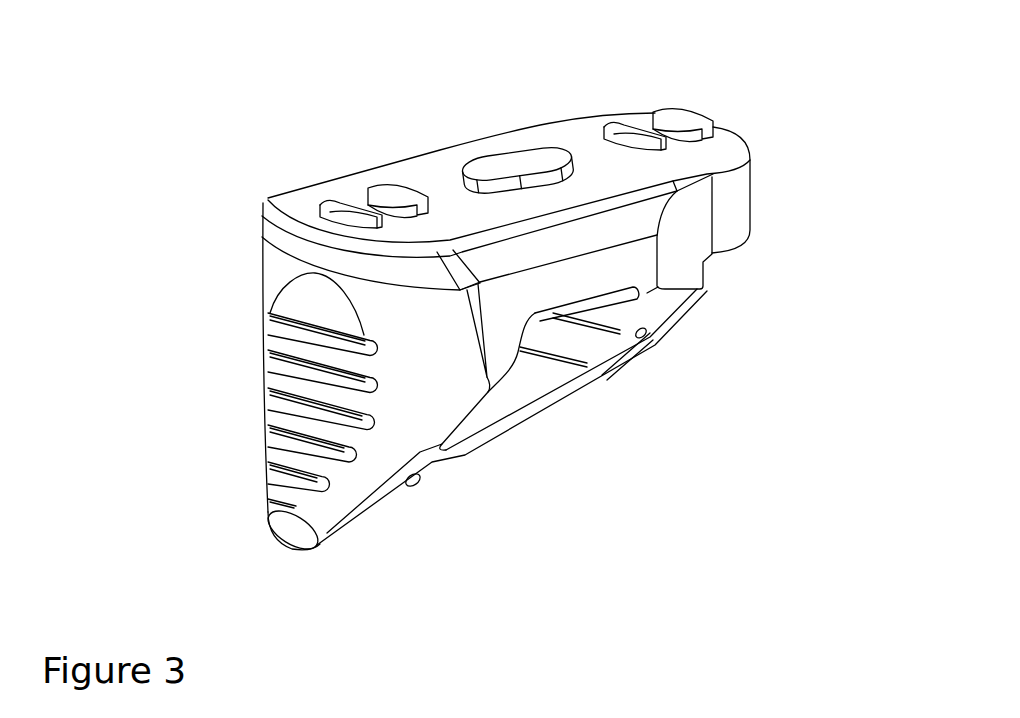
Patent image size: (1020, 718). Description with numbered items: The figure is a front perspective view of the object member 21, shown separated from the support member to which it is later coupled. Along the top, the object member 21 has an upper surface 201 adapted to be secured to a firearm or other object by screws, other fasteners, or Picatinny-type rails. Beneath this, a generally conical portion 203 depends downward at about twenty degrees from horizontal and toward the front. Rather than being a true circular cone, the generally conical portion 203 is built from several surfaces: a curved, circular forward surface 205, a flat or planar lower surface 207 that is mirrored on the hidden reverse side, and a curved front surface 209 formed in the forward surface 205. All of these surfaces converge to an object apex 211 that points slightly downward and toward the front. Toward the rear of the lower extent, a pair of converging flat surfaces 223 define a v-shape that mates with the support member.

The object member 21 is at (302, 143).
The upper surface 201 is at (718, 150).
The generally conical portion 203 is at (237, 510).
The curved forward surface 205 is at (435, 362).
The flat lower surface 207 is at (428, 462).
The curved front surface 209 is at (322, 297).
The object apex 211 is at (290, 533).
The converging flat surfaces 223 is at (657, 313).